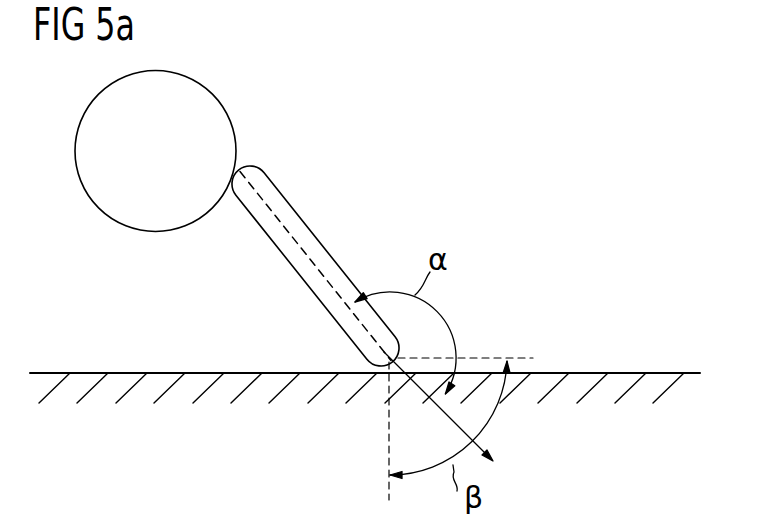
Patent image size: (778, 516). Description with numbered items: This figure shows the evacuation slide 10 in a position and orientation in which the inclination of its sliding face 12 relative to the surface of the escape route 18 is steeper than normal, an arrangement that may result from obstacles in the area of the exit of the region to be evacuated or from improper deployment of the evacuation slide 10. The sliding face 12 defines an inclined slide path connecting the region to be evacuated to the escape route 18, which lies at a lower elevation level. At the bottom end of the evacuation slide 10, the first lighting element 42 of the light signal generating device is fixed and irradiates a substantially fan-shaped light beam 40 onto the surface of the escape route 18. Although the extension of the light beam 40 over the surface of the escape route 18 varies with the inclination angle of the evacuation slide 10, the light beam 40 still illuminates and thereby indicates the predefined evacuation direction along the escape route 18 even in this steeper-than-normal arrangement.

The evacuation slide 10 is at (237, 219).
The sliding face 12 is at (262, 195).
The escape route 18 is at (597, 378).
The light beam 40 is at (488, 412).
The first lighting element 42 is at (403, 357).